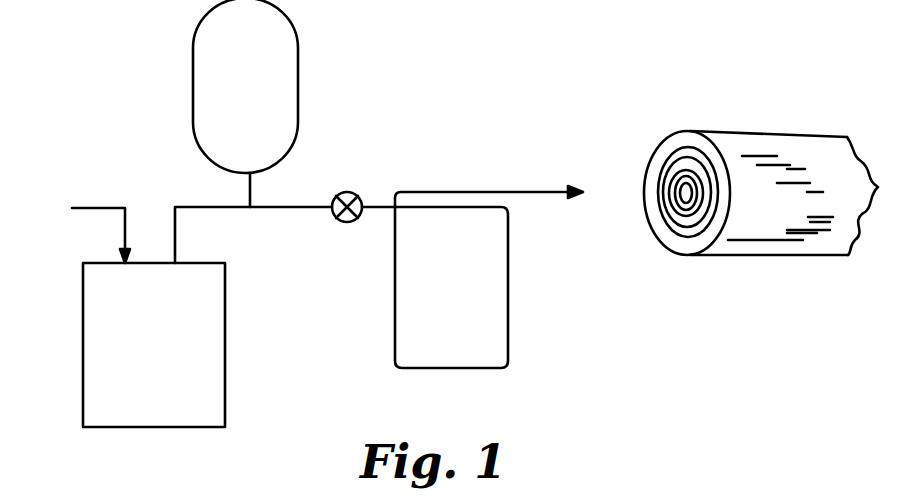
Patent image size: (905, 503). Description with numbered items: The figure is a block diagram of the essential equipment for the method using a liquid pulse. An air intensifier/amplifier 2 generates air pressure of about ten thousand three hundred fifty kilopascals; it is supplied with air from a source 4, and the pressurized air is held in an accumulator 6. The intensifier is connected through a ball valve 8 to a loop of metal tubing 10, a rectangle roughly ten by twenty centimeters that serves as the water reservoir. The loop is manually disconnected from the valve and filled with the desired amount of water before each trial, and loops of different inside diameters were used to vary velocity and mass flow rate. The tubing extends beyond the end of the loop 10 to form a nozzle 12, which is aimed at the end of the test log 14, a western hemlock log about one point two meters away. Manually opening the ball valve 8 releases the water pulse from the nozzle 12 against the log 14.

The air intensifier/amplifier 2 is at (162, 355).
The air source 4 is at (86, 207).
The accumulator 6 is at (258, 109).
The ball valve 8 is at (345, 192).
The loop of metal tubing 10 is at (396, 270).
The nozzle 12 is at (578, 186).
The test log 14 is at (765, 131).